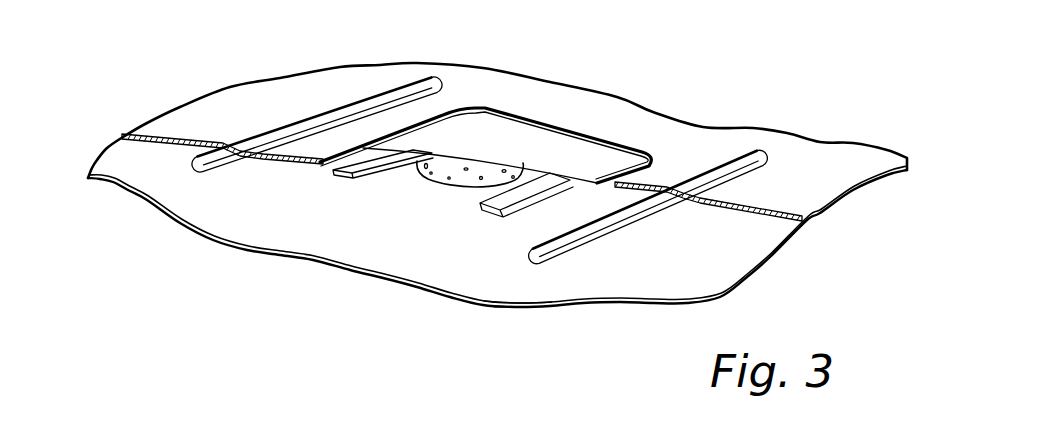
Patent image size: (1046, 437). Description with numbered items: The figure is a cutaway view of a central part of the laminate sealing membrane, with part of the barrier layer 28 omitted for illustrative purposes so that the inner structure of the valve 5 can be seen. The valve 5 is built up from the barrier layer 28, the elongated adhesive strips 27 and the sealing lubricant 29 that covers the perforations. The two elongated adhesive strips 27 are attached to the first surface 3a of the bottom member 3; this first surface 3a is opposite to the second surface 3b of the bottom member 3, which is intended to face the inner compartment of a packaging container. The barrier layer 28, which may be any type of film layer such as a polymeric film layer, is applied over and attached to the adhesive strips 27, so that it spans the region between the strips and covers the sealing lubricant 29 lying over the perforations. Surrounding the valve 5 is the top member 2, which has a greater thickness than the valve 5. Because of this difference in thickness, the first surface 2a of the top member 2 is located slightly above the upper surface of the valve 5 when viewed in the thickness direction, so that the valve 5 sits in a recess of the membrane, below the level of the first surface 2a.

The top member 2 is at (867, 153).
The first surface of the top member 2a is at (797, 157).
The bottom member 3 is at (746, 299).
The first surface of the bottom member 3a is at (528, 270).
The second surface of the bottom member 3b is at (513, 297).
The valve 5 is at (474, 116).
The elongated adhesive strips 27 is at (343, 173).
The barrier layer 28 is at (513, 143).
The sealing lubricant 29 is at (462, 172).